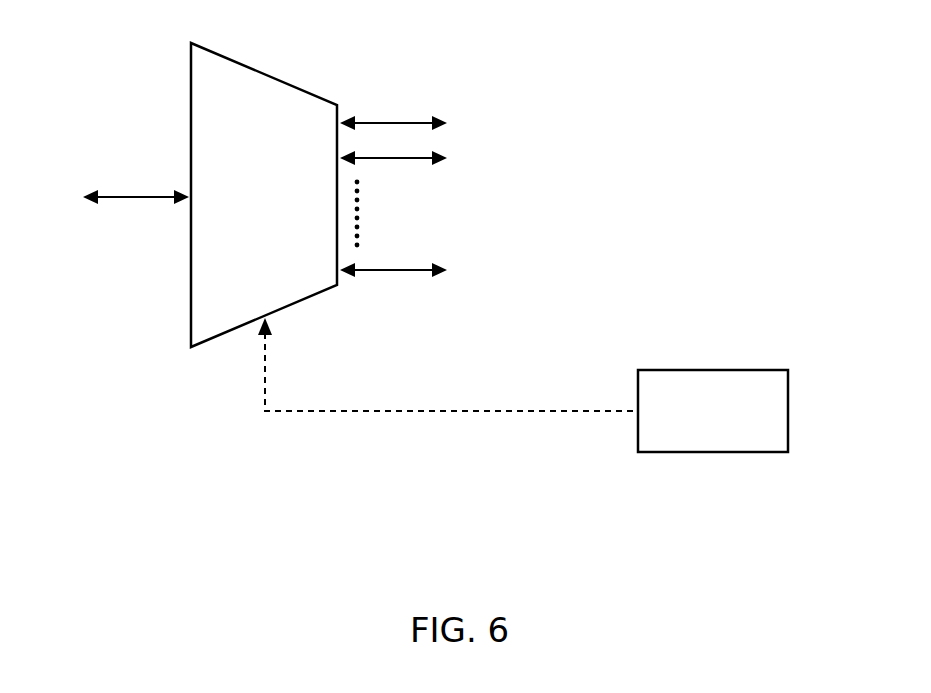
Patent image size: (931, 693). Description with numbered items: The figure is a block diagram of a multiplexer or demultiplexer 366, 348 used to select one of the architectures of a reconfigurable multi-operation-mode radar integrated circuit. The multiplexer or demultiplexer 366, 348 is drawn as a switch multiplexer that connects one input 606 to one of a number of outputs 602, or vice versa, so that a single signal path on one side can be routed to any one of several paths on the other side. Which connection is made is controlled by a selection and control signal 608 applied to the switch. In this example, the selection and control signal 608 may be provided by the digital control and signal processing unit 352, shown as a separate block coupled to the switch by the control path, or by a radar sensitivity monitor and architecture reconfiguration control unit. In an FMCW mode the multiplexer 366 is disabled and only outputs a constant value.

The multiplexer 366 is at (640, 100).
The demultiplexer 348 is at (435, 242).
The outputs 602 is at (395, 108).
The input 606 is at (143, 199).
The selection and control signal 608 is at (262, 363).
The digital control and signal processing unit 352 is at (700, 370).